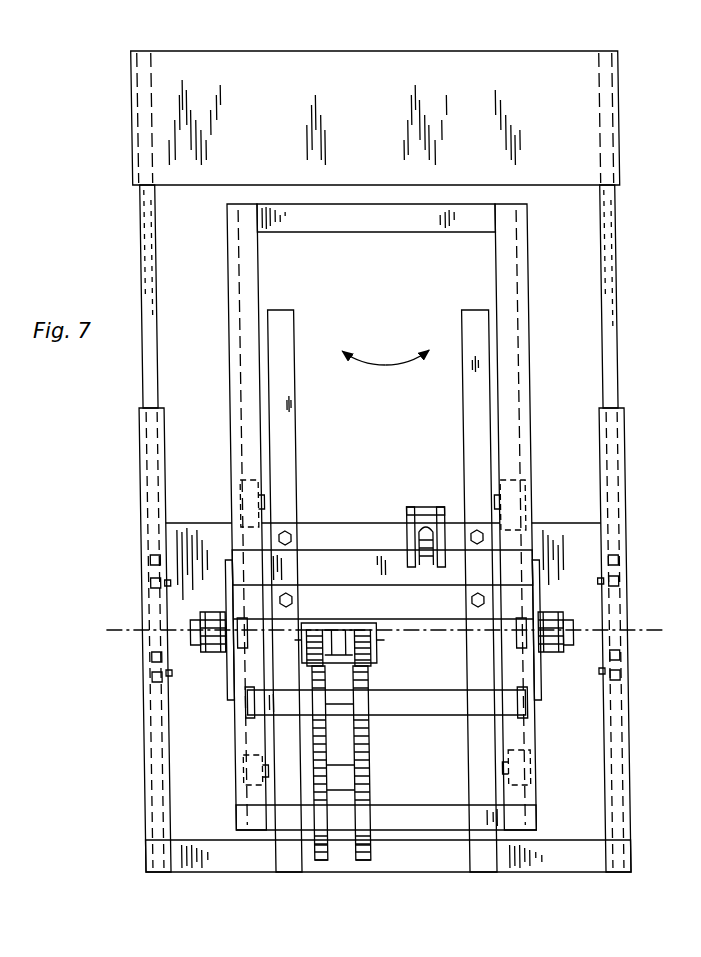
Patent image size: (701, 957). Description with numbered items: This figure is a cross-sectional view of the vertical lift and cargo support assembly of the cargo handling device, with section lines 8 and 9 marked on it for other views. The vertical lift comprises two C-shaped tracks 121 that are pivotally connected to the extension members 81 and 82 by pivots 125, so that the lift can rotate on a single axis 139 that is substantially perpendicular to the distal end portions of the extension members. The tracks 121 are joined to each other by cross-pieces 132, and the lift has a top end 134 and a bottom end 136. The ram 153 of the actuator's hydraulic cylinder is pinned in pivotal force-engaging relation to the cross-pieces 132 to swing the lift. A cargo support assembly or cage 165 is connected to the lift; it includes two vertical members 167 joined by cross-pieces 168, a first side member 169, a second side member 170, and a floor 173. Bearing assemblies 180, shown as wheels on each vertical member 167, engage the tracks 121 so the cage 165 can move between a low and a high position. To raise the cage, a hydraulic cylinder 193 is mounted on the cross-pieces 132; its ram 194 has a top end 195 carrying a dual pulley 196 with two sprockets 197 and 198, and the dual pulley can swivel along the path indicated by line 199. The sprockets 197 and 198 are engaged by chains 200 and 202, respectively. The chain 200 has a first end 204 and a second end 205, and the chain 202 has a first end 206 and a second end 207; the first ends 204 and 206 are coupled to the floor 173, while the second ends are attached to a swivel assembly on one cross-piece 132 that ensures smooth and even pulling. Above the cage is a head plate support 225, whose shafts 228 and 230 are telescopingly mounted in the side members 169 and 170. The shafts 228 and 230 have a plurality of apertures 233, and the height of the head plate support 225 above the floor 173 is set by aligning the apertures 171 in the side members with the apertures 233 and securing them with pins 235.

The section line 8- 8 is at (256, 455).
The section line 9- 9 is at (117, 465).
The extension member 81 is at (553, 652).
The extension member 82 is at (208, 654).
The tracks 121 is at (228, 262).
The pivots 125 is at (193, 626).
The cross-pieces 132 is at (400, 228).
The top end 134 is at (590, 206).
The bottom end 136 is at (541, 813).
The axis 139 is at (102, 630).
The ram 153 is at (406, 522).
The cargo support assembly or cage 165 is at (636, 742).
The vertical members 167 is at (286, 318).
The cross-pieces 168 is at (313, 525).
The first side member 169 is at (602, 410).
The second side member 170 is at (140, 488).
The apertures 171 is at (143, 583).
The floor 173 is at (568, 850).
The bearing assemblies 180 is at (240, 487).
The hydraulic cylinder 193 is at (368, 750).
The ram 194 is at (366, 678).
The top end 195 is at (366, 664).
The dual pulley 196 is at (342, 632).
The sprocket 197 is at (432, 622).
The sprocket 198 is at (300, 645).
The line 199 is at (420, 347).
The chain 200 is at (362, 775).
The chain 202 is at (312, 770).
The first end 204 is at (365, 703).
The second end 205 is at (375, 850).
The first end 206 is at (250, 706).
The second end 207 is at (300, 854).
The head plate support 225 is at (178, 42).
The shaft 228 is at (612, 250).
The shaft 230 is at (142, 213).
The apertures 233 is at (142, 552).
The pins 235 is at (142, 586).